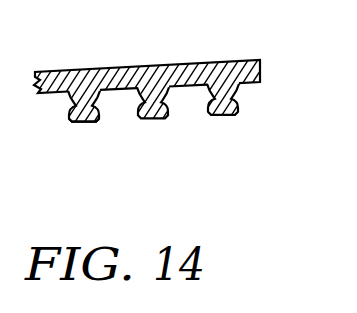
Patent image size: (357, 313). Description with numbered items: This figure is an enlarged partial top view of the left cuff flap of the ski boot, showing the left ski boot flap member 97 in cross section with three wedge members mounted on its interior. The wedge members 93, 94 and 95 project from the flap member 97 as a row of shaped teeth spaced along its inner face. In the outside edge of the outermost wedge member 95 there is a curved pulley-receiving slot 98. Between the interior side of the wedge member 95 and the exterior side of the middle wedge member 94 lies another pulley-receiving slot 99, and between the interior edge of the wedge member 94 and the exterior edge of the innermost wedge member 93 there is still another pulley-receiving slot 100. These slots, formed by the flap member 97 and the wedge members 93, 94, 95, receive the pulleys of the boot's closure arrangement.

The left ski boot flap member 97 is at (173, 65).
The curved pulley-receiving slot 98 is at (69, 112).
The wedge member 95 is at (95, 122).
The pulley-receiving slot 99 is at (118, 97).
The wedge member 94 is at (154, 119).
The pulley-receiving slot 100 is at (188, 94).
The wedge member 93 is at (228, 115).